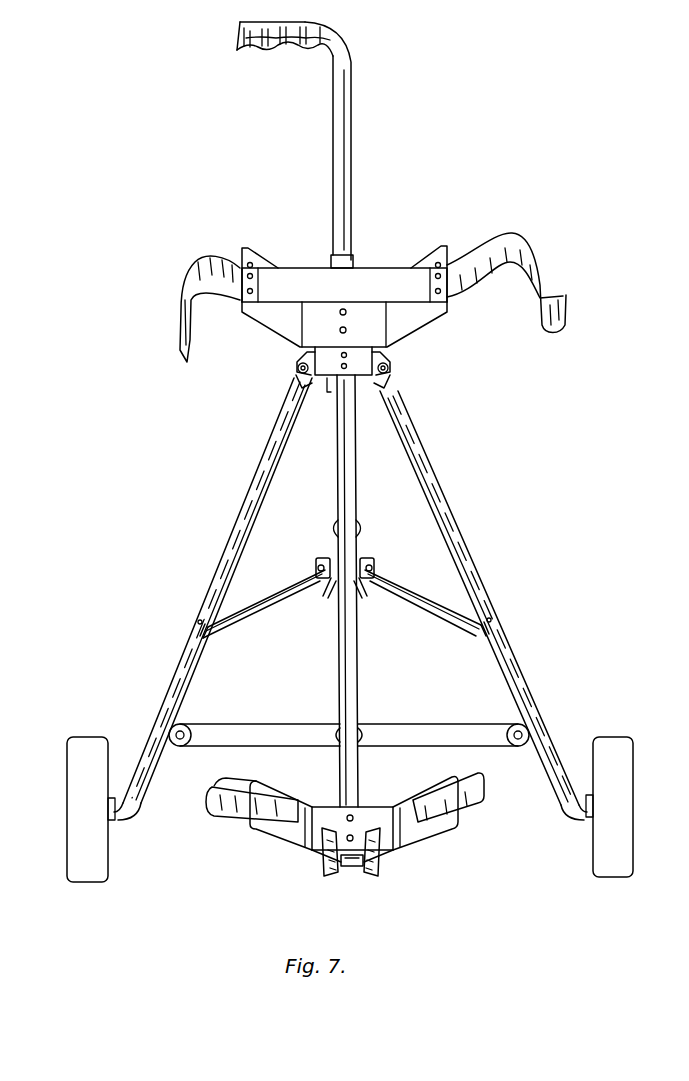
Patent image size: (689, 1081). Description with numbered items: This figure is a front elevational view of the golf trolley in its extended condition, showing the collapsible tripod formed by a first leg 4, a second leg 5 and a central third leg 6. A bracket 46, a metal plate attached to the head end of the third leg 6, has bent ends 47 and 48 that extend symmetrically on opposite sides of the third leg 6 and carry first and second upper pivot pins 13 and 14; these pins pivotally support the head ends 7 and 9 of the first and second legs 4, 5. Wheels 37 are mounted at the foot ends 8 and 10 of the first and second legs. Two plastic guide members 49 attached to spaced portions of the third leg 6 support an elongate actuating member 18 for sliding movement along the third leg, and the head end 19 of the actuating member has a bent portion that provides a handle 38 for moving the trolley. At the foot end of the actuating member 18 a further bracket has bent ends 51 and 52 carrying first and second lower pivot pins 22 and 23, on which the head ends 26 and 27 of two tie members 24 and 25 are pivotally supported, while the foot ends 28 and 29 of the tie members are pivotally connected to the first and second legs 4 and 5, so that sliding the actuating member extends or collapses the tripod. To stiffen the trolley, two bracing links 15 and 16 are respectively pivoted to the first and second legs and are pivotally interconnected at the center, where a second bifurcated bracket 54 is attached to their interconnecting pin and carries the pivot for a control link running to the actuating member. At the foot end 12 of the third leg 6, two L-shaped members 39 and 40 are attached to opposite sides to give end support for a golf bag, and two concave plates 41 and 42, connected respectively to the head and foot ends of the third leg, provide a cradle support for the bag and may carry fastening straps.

The first leg 4 is at (448, 523).
The second leg 5 is at (252, 508).
The third leg 6 is at (348, 456).
The head end of first leg 7 is at (372, 388).
The foot end of first leg 8 is at (562, 803).
The head end of second leg 9 is at (302, 388).
The foot end of second leg 10 is at (134, 812).
The foot end of third leg 12 is at (350, 867).
The first upper pivot pin 13 is at (388, 370).
The second upper pivot pin 14 is at (298, 370).
The bracing link 15 is at (443, 730).
The bracing link 16 is at (255, 730).
The actuating member 18 is at (345, 210).
The head end of actuating member 19 is at (340, 62).
The first lower pivot pin 22 is at (376, 570).
The second lower pivot pin 23 is at (314, 570).
The tie member 24 is at (421, 595).
The tie member 25 is at (258, 605).
The head end of tie member 26 is at (370, 560).
The head end of tie member 27 is at (322, 560).
The foot end of tie member 28 is at (474, 634).
The foot end of tie member 29 is at (217, 638).
The wheels 37 is at (85, 872).
The handle 38 is at (237, 30).
The L-shaped member 39 is at (385, 857).
The L-shaped member 40 is at (318, 860).
The concave plate 41 is at (250, 250).
The concave plate 42 is at (258, 830).
The bracket 46 is at (331, 383).
The bent end of bracket 47 is at (378, 356).
The bent end of bracket 48 is at (310, 360).
The plastic guide members 49 is at (358, 260).
The bent end of further bracket 51 is at (362, 584).
The bent end of further bracket 52 is at (330, 584).
The second bifurcated bracket 54 is at (336, 732).